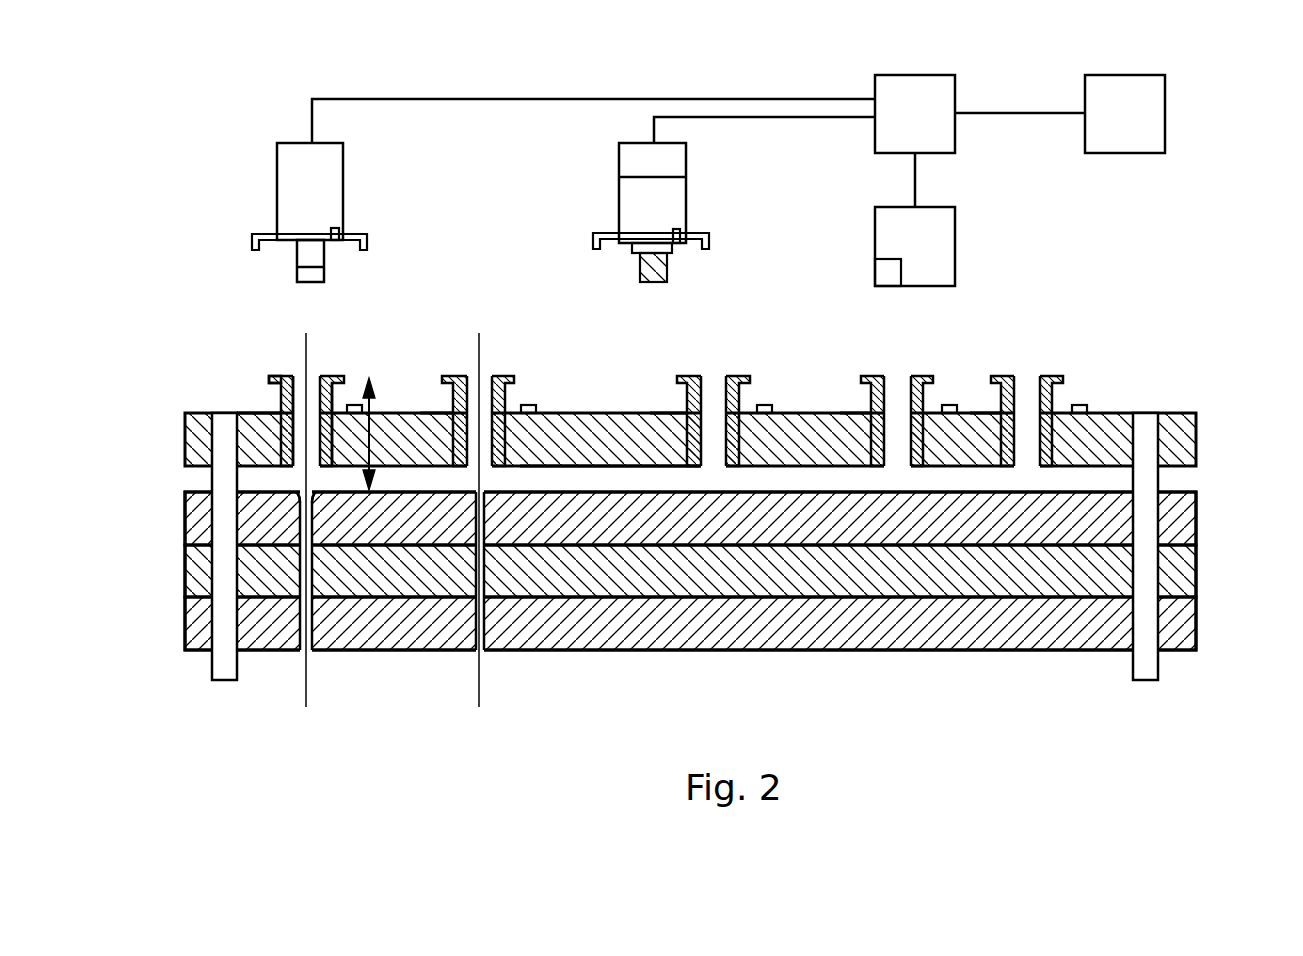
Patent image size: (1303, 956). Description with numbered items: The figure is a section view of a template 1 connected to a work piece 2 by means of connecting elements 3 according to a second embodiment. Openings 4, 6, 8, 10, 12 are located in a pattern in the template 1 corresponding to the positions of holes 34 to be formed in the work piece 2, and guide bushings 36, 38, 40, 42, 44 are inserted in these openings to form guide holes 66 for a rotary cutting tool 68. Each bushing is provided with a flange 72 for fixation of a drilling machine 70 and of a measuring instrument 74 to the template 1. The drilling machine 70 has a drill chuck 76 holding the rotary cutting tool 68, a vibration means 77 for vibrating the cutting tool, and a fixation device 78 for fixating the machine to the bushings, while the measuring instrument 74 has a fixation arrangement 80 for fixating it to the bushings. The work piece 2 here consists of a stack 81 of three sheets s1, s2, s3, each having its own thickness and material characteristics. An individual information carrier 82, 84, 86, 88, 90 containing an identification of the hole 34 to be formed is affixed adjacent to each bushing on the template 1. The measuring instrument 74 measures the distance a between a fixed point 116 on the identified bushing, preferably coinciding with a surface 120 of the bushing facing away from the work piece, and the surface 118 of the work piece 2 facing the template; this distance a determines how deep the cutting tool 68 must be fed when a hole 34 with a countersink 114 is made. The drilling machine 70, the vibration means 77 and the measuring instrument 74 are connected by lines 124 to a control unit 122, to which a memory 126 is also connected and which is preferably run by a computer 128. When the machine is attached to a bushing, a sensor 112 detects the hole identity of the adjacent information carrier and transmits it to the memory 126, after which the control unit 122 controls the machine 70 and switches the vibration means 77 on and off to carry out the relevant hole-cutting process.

The template 1 is at (187, 432).
The work piece 2 is at (694, 571).
The connecting elements 3 is at (220, 413).
The opening 4 is at (278, 432).
The opening 6 is at (447, 440).
The opening 8 is at (682, 440).
The opening 10 is at (872, 440).
The opening 12 is at (1000, 435).
The hole 34 is at (312, 652).
The guide bushing 36 is at (313, 382).
The guide bushing 38 is at (500, 376).
The guide bushing 40 is at (740, 376).
The guide bushing 42 is at (928, 376).
The guide bushing 44 is at (1057, 376).
The guide hole 66 is at (310, 377).
The rotary cutting tool 68 is at (640, 278).
The drilling machine 70 is at (693, 200).
The flange 72 is at (267, 382).
The measuring instrument 74 is at (343, 187).
The drill chuck 76 is at (632, 250).
The vibration means 77 is at (686, 150).
The fixation device 78 is at (593, 240).
The fixation arrangement 80 is at (252, 238).
The stack 81 is at (1218, 522).
The information carrier 82 is at (353, 404).
The information carrier 84 is at (529, 404).
The information carrier 86 is at (765, 404).
The information carrier 88 is at (949, 404).
The information carrier 90 is at (1079, 404).
The sensor 112 is at (338, 240).
The countersink 114 is at (300, 491).
The fixed point 116 is at (337, 377).
The surface 118 is at (551, 492).
The surface 120 is at (327, 377).
The control unit 122 is at (955, 135).
The signal line 124 is at (455, 99).
The memory 126 is at (1150, 153).
The computer 128 is at (955, 238).
The distance a is at (378, 406).
The sheet s1 is at (185, 525).
The sheet s2 is at (185, 576).
The sheet s3 is at (185, 633).